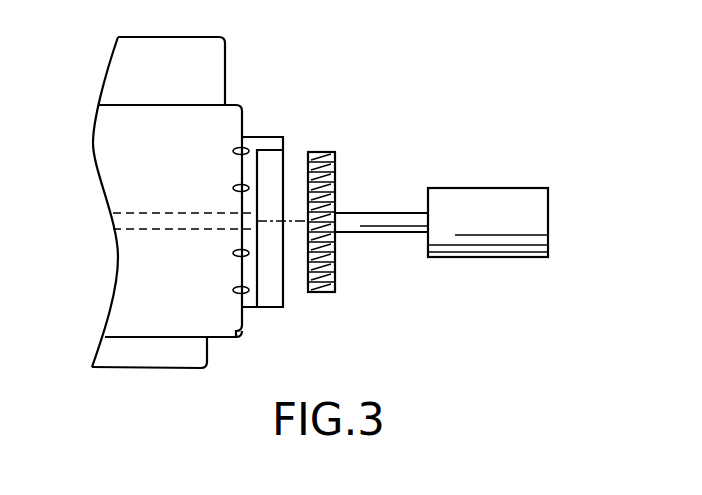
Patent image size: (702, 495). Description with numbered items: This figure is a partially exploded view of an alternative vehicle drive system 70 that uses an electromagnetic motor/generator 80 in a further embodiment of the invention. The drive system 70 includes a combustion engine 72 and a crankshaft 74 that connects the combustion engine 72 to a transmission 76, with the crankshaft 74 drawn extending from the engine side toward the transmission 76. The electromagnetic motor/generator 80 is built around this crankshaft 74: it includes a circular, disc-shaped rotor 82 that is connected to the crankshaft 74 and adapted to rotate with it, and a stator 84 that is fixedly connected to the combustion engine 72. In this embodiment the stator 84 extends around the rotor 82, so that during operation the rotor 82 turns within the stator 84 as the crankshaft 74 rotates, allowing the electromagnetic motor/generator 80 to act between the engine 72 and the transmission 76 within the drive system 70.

The vehicle drive system 70 is at (412, 92).
The combustion engine 72 is at (238, 107).
The crankshaft 74 is at (382, 234).
The transmission 76 is at (488, 188).
The electromagnetic motor/generator 80 is at (320, 90).
The rotor 82 is at (323, 152).
The stator 84 is at (260, 136).